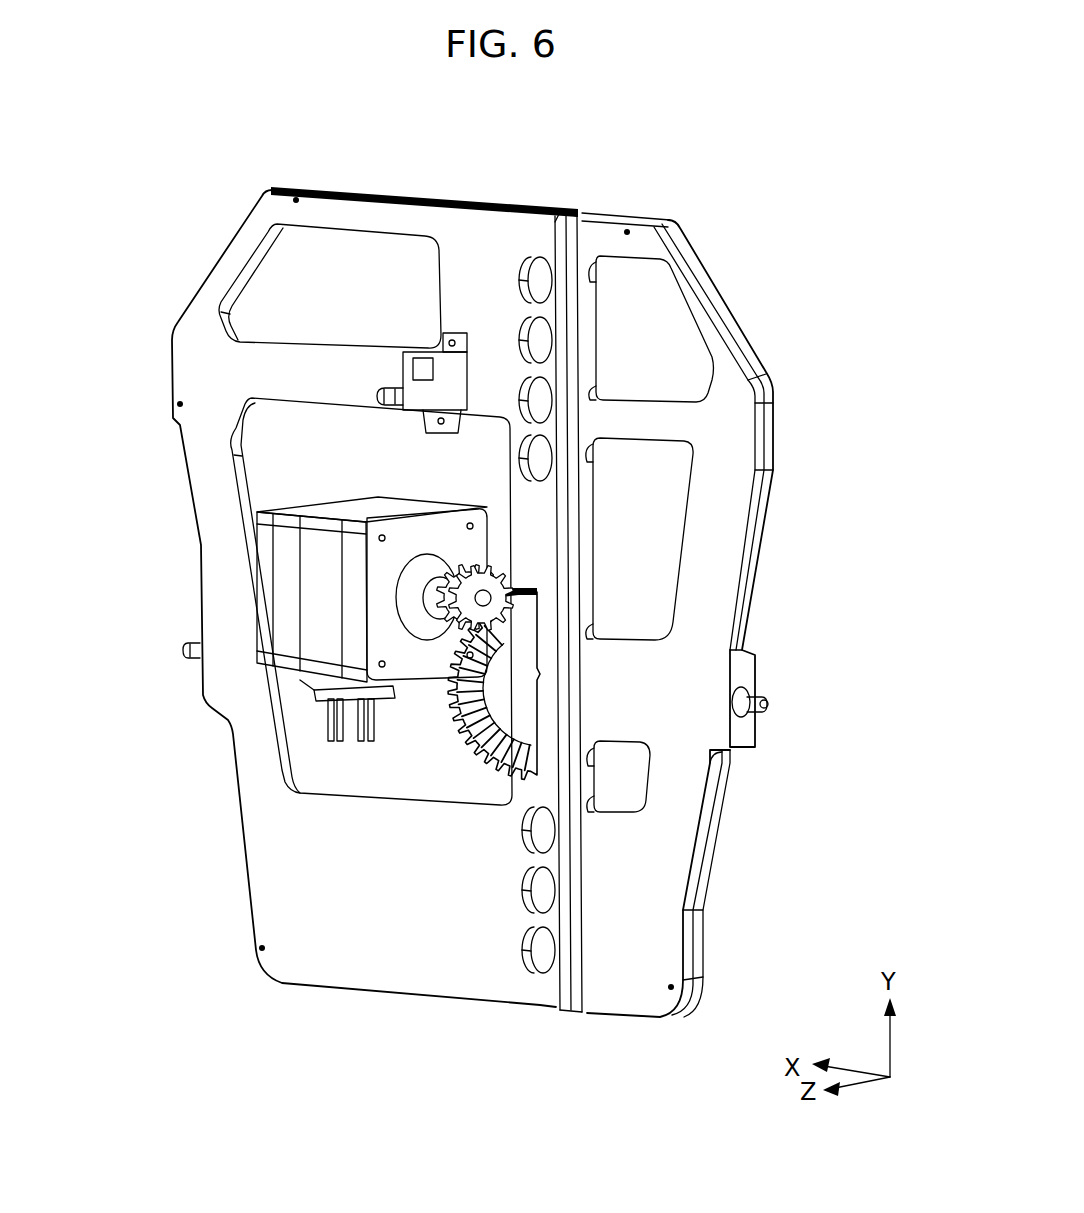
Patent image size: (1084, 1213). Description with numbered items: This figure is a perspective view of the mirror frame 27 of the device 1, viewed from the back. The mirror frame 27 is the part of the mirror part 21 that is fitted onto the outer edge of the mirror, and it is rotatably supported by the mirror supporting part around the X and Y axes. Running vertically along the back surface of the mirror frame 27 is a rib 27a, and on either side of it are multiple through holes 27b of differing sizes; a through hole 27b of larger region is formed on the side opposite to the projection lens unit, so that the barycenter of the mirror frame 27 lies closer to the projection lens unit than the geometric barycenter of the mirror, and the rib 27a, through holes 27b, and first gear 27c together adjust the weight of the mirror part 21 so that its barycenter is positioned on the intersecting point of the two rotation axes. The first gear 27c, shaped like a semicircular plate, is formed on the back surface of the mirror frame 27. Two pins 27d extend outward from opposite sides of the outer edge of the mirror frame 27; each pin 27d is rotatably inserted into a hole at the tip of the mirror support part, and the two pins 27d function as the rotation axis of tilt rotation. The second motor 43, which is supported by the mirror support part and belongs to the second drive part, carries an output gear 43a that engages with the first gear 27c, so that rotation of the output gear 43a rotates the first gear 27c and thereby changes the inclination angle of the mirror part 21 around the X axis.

The printer 1 is at (510, 112).
The mirror part 21 is at (834, 209).
The mirror frame 27 is at (700, 295).
The rib 27a is at (565, 240).
The through holes 27b is at (270, 293).
The first gear 27c is at (505, 694).
The pins 27d is at (185, 650).
The second motor 43 is at (290, 592).
The output gear 43a is at (483, 600).